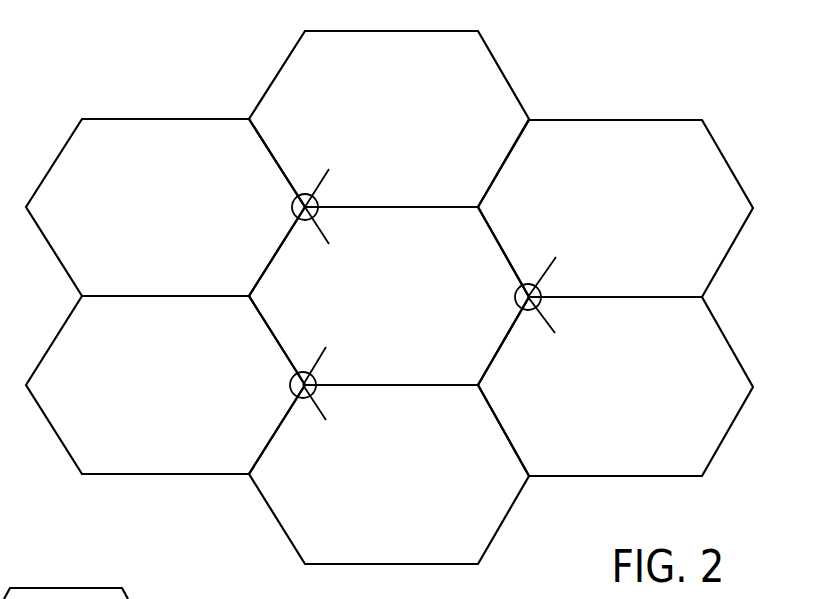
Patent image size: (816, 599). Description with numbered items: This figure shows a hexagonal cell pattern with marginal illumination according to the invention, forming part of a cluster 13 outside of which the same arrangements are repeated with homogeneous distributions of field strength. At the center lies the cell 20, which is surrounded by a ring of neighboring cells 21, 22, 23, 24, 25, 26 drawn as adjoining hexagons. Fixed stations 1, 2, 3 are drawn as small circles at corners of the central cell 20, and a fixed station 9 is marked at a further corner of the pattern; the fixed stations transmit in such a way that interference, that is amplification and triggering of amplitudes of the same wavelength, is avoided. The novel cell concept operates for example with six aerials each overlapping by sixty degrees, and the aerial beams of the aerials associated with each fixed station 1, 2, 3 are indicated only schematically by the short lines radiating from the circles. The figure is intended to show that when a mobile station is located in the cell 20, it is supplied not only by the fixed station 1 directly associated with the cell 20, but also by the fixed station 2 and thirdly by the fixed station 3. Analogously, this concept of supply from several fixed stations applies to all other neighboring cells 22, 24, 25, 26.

The cluster 13 is at (597, 98).
The cell 20 is at (389, 296).
The neighboring cell 21 is at (389, 119).
The neighboring cell 22 is at (165, 207).
The neighboring cell 23 is at (615, 208).
The neighboring cell 24 is at (615, 386).
The neighboring cell 25 is at (389, 474).
The neighboring cell 26 is at (165, 385).
The fixed station 1 is at (288, 385).
The fixed station 2 is at (291, 207).
The fixed station 3 is at (513, 297).
The fixed station 9 is at (518, 477).